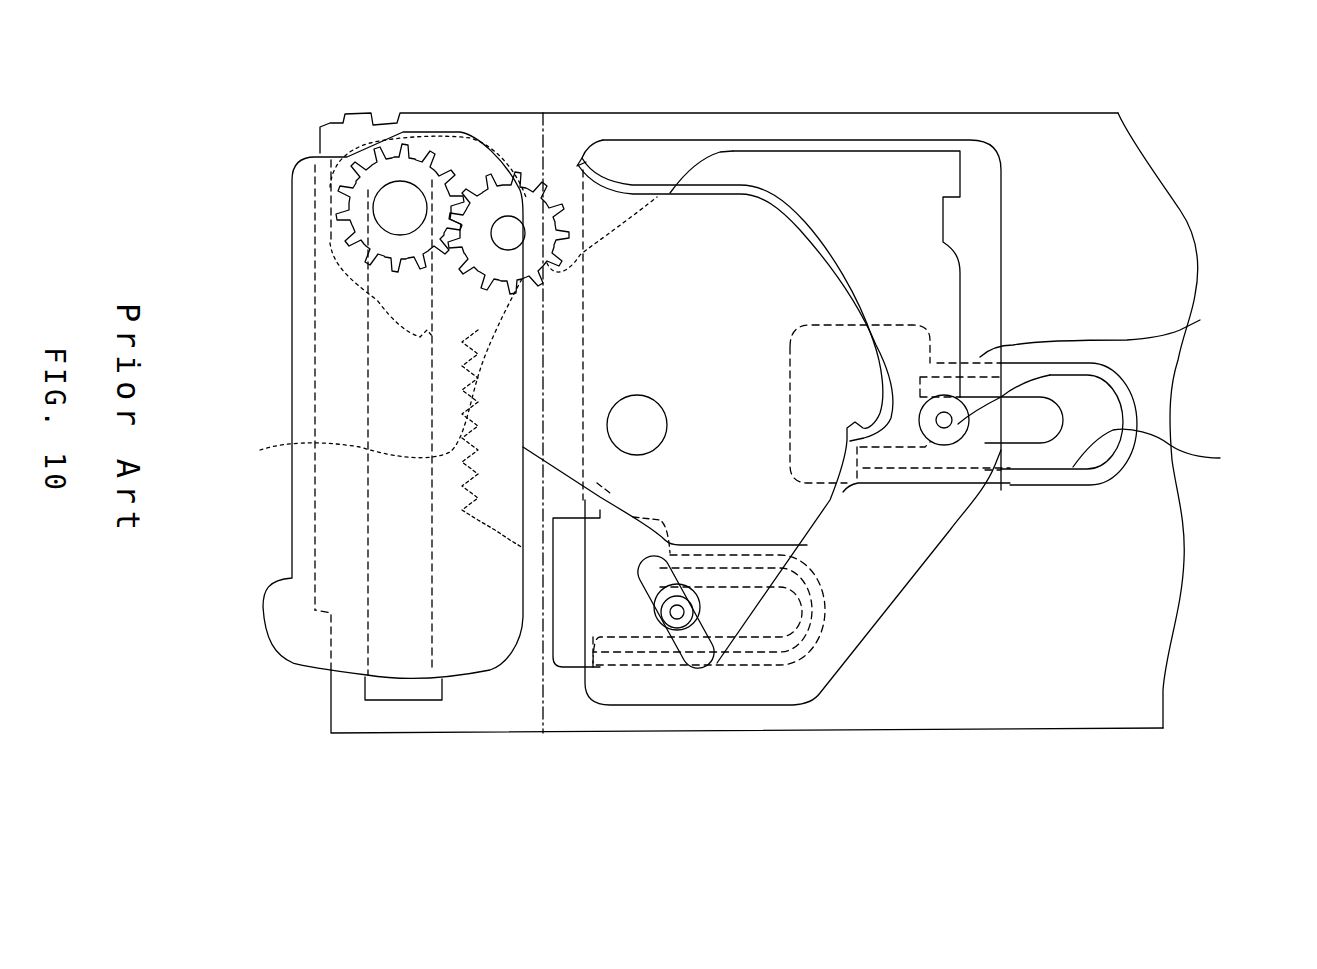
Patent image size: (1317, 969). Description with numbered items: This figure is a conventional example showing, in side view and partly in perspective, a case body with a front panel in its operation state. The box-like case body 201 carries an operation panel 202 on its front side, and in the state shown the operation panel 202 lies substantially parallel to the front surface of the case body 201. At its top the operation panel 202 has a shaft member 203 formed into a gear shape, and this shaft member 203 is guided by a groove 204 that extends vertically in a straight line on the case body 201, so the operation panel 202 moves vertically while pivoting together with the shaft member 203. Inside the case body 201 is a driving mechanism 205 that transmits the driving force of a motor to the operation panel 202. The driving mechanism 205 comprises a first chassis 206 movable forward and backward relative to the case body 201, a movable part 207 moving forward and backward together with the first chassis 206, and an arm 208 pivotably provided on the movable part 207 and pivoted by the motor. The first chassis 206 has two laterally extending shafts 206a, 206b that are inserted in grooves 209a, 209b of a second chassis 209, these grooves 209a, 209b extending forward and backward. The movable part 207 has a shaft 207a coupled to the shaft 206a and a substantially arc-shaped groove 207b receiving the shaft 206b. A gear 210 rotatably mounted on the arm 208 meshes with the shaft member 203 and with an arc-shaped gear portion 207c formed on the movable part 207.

The case body 201 is at (522, 513).
The operation panel 202 is at (292, 300).
The shaft member 203 is at (383, 209).
The groove 204 is at (373, 393).
The driving mechanism 205 is at (627, 172).
The first chassis 206 is at (987, 167).
The shaft 206a is at (1130, 393).
The shaft 206b is at (677, 620).
The movable part 207 is at (900, 167).
The shaft 207a is at (946, 419).
The arc-shaped groove 207b is at (640, 590).
The arc-shaped gear portion 207c is at (356, 412).
The arm 208 is at (742, 222).
The second chassis 209 is at (910, 677).
The groove 209a is at (1220, 458).
The groove 209b is at (780, 667).
The gear 210 is at (492, 207).